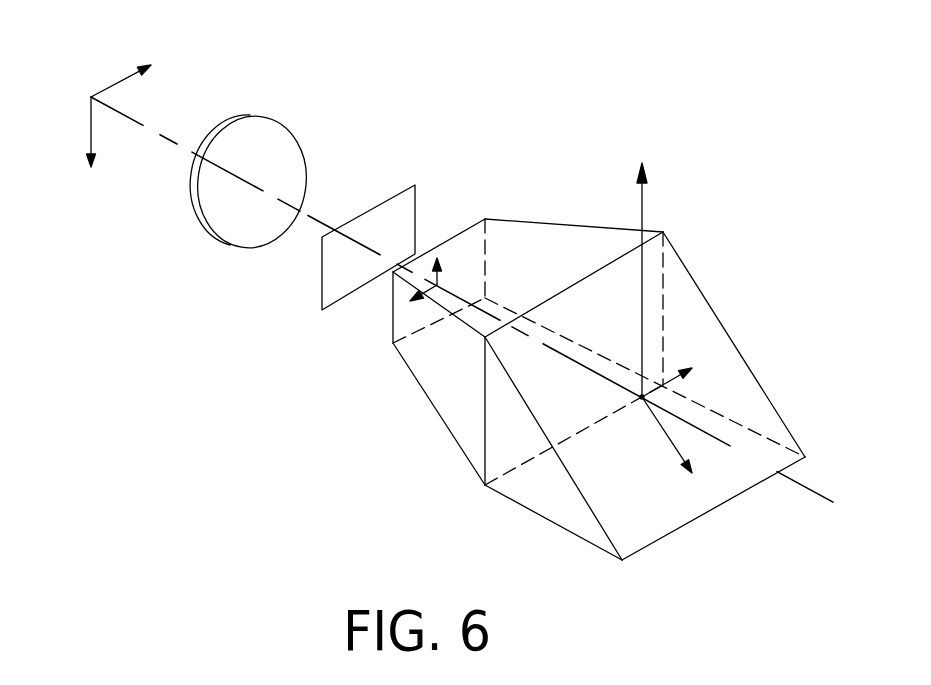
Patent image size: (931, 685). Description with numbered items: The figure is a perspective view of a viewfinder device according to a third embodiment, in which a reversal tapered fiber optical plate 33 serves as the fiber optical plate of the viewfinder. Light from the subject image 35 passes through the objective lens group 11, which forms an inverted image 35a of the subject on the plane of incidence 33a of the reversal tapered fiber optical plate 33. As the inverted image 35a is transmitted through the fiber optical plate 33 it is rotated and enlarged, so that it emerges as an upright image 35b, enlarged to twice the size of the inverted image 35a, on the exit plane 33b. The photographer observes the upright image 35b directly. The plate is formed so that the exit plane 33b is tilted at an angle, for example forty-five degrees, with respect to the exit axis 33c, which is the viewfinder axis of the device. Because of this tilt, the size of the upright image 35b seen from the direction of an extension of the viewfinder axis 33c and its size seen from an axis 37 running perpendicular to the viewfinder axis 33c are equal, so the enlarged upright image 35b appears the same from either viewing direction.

The objective lens group 11 is at (290, 90).
The reversal tapered fiber optical plate 33 is at (606, 328).
The plane of incidence 33a is at (462, 240).
The exit plane 33b is at (717, 348).
The exit axis 33c is at (550, 346).
The subject image 35 is at (110, 82).
The inverted image 35a is at (433, 294).
The upright image 35b is at (672, 438).
The axis 37 is at (643, 205).